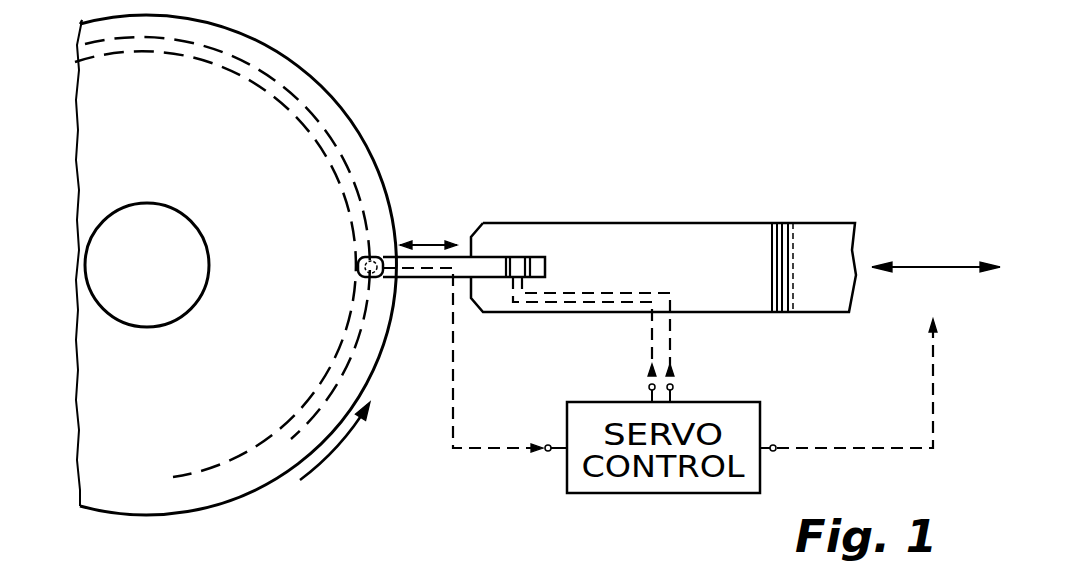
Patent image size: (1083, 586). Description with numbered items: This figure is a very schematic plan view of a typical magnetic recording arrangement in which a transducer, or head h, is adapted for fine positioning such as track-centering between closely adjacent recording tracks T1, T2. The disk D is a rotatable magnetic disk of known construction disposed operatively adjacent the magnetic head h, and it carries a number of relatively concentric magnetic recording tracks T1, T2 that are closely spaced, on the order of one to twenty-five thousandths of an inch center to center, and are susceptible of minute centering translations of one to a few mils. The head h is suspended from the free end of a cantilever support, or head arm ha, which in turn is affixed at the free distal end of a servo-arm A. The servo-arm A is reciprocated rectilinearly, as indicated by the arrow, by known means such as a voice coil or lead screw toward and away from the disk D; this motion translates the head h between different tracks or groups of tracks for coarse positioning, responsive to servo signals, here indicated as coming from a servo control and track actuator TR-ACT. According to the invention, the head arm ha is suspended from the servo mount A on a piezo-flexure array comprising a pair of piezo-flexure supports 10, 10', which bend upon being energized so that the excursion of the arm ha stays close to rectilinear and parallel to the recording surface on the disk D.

The disk D is at (130, 515).
The recording track T1 is at (337, 135).
The recording track T2 is at (305, 406).
The head h is at (378, 252).
The head arm ha is at (427, 265).
The piezo-flexure support 10 is at (577, 287).
The piezo-flexure support 10' is at (598, 279).
The servo-arm A is at (738, 287).
The track actuator drive TR-ACT is at (880, 356).